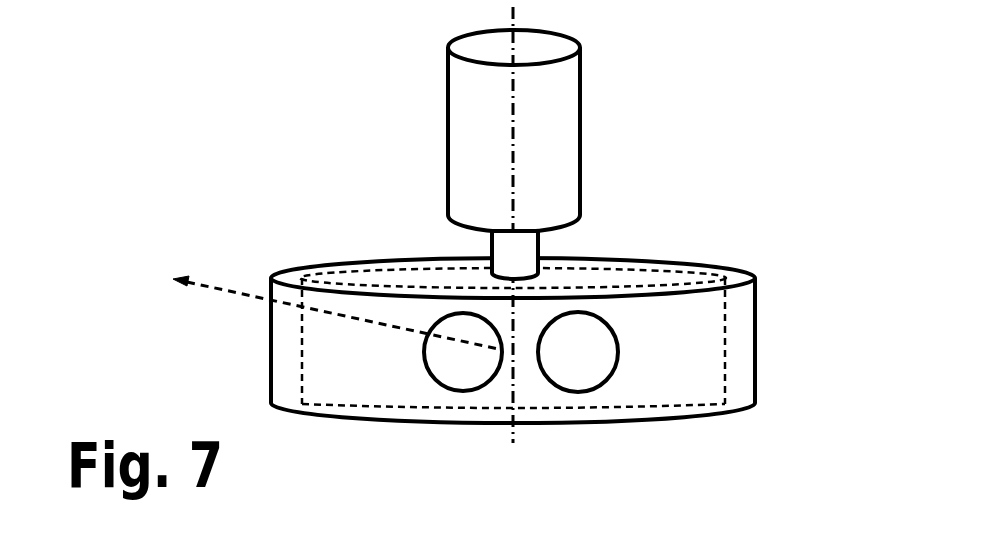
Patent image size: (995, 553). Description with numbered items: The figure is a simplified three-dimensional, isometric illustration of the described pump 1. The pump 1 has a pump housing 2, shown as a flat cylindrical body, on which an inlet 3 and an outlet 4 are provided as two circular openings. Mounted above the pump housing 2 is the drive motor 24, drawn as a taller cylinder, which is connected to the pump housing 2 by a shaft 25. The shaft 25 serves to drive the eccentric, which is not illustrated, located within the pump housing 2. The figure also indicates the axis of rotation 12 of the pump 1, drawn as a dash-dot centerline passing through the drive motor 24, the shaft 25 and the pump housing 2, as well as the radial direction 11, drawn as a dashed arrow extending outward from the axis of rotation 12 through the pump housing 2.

The pump 1 is at (336, 136).
The pump housing 2 is at (268, 352).
The inlet 3 is at (605, 383).
The outlet 4 is at (433, 383).
The radial direction 11 is at (225, 289).
The axis of rotation 12 is at (516, 20).
The drive motor 24 is at (583, 173).
The shaft 25 is at (540, 242).